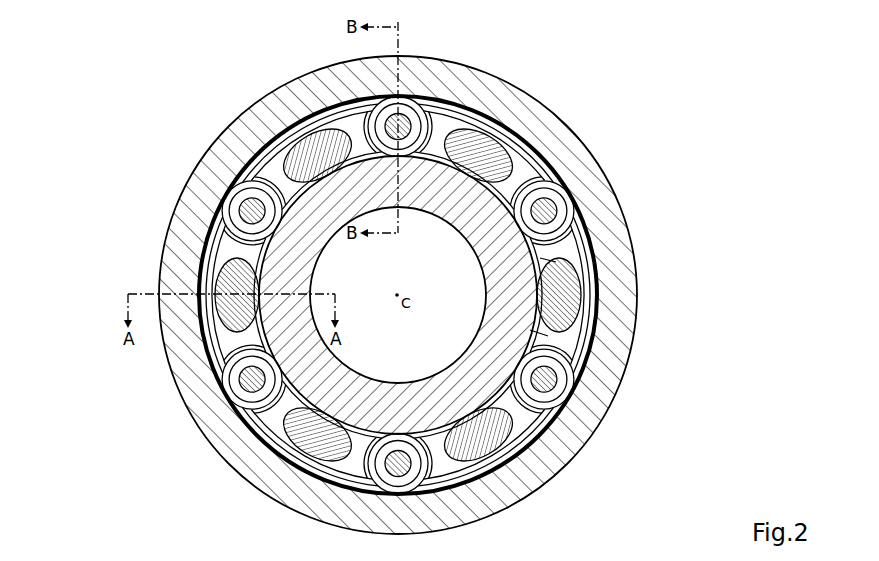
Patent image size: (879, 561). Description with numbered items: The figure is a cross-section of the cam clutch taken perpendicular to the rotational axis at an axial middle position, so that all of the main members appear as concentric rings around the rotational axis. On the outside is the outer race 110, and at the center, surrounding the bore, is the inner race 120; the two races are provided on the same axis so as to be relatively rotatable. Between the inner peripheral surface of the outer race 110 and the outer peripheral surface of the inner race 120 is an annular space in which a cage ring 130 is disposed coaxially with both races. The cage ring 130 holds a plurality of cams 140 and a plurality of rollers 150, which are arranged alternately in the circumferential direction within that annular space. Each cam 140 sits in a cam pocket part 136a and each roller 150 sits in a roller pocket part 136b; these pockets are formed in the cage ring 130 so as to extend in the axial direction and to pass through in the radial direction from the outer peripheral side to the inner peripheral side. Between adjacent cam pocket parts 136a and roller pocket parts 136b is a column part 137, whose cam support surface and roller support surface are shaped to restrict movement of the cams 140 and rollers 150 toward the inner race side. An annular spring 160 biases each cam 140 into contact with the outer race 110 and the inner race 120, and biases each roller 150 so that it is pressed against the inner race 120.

The outer race 110 is at (248, 128).
The inner race 120 is at (316, 393).
The cage ring 130 is at (202, 238).
The cam pocket part 136a is at (548, 266).
The roller pocket part 136b is at (565, 375).
The column part 137 is at (552, 333).
The cam 140 is at (583, 300).
The roller 150 is at (563, 408).
The annular spring 160 is at (548, 152).